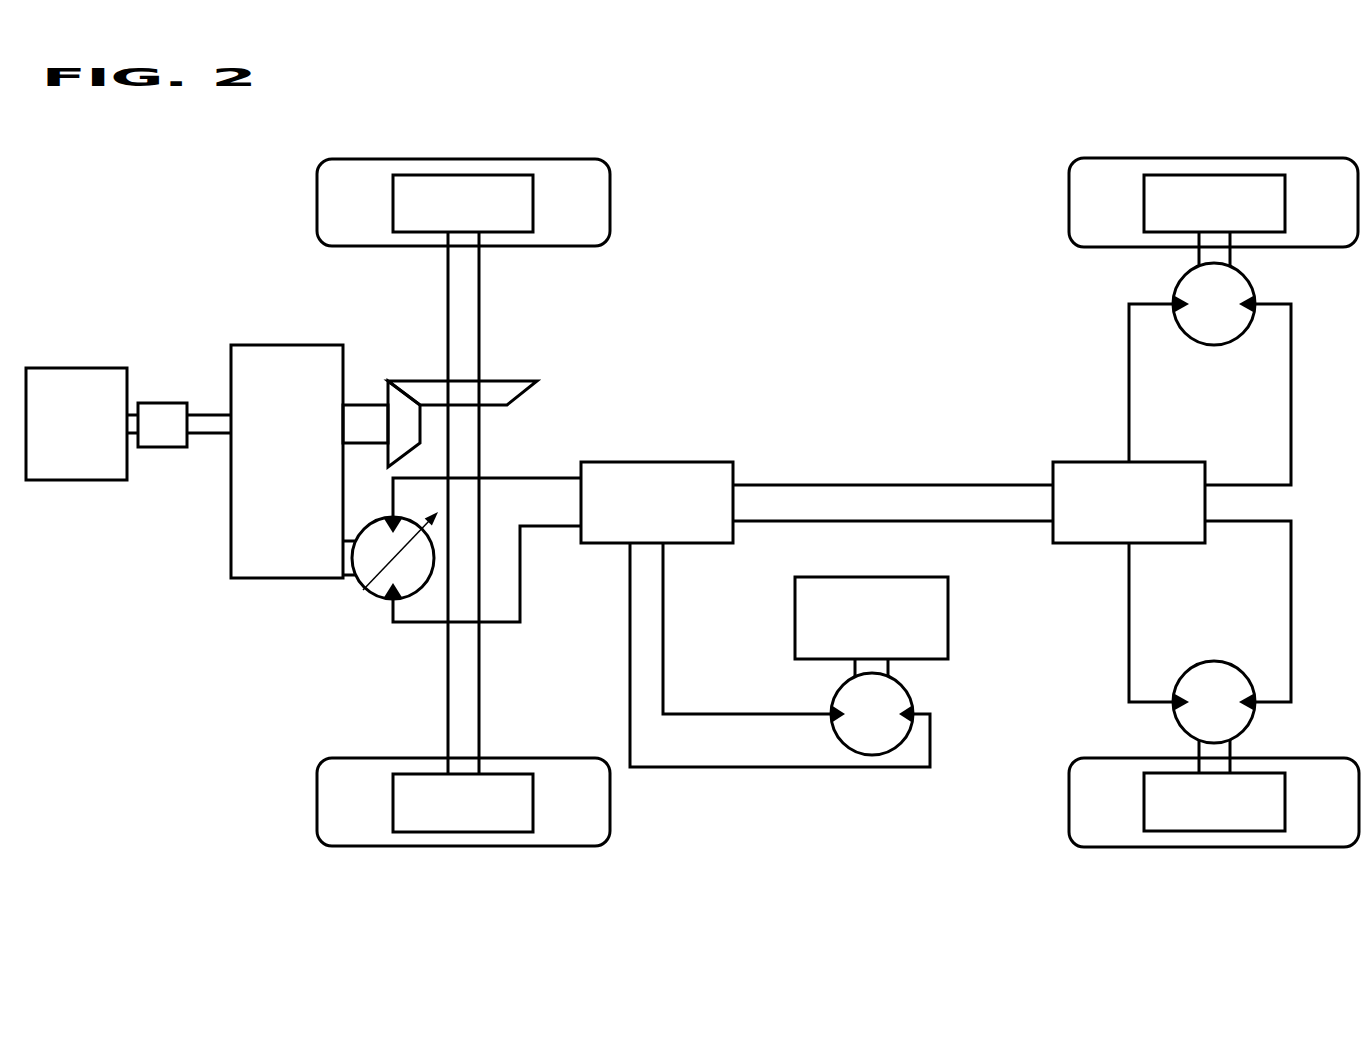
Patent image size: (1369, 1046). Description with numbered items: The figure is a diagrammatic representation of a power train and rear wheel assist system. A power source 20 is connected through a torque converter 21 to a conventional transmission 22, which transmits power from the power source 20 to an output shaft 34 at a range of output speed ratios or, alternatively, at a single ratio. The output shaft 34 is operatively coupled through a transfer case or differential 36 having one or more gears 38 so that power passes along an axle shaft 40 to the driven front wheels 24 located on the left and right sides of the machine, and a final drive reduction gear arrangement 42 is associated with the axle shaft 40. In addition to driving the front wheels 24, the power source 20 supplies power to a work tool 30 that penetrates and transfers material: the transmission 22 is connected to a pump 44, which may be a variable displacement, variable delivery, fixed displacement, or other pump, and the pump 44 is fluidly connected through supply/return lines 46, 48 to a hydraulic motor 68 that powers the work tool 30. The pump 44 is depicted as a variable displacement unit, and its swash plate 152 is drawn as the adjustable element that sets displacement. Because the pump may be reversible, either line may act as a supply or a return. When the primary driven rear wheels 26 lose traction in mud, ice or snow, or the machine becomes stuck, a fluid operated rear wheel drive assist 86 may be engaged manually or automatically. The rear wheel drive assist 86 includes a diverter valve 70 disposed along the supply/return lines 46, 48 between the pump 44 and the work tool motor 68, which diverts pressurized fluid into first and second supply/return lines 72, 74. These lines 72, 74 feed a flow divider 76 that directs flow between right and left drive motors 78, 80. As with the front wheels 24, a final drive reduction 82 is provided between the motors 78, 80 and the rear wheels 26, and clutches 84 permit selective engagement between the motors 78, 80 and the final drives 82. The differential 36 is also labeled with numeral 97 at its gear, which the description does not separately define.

The power source 20 is at (64, 439).
The torque converter 21 is at (150, 439).
The transmission 22 is at (277, 479).
The front wheels 24 is at (552, 215).
The rear wheels 26 is at (1304, 216).
The work tool 30 is at (860, 634).
The output shaft 34 is at (352, 439).
The differential 36 is at (470, 375).
The gears 38 is at (447, 375).
The axle shaft 40 is at (479, 275).
The final drive reduction gear arrangement 42 is at (449, 215).
The pump 44 is at (347, 592).
The supply/return line 46 is at (522, 592).
The supply/return line 48 is at (535, 478).
The hydraulic motor 68 is at (847, 677).
The diverter valve 70 is at (645, 517).
The first supply/return line 72 is at (782, 521).
The second supply/return line 74 is at (777, 485).
The flow divider 76 is at (1112, 517).
The right drive motor 78 is at (1181, 276).
The left drive motor 80 is at (1180, 726).
The final drive reduction 82 is at (1200, 216).
The clutches 84 is at (1251, 264).
The rear wheel drive assist 86 is at (893, 447).
The ring gear 97 is at (425, 381).
The swash plate 152 is at (356, 597).